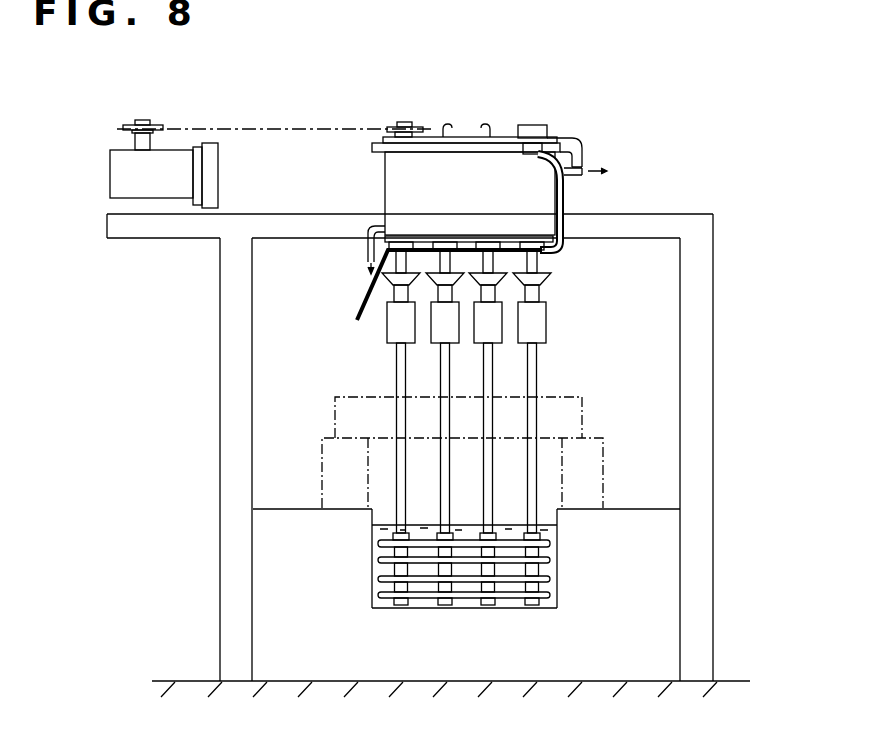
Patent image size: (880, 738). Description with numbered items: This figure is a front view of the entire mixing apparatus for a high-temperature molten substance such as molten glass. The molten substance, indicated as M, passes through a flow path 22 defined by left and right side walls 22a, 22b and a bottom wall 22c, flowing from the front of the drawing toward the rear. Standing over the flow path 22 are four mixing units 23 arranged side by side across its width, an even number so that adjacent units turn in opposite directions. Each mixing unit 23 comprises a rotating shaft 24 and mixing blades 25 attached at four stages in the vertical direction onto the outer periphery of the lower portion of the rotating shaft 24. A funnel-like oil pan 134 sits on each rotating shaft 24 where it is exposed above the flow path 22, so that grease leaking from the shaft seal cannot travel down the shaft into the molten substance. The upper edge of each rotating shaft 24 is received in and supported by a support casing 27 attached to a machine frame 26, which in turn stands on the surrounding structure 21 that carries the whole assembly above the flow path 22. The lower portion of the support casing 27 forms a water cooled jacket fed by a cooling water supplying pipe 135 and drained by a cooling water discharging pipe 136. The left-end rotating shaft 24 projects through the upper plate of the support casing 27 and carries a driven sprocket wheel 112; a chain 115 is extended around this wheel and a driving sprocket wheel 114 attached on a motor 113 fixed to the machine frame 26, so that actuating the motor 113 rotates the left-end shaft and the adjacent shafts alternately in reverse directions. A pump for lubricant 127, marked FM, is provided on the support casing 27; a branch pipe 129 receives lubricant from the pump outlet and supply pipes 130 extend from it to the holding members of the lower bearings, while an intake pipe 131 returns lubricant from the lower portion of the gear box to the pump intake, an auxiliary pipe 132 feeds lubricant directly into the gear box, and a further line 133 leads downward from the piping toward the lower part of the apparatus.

The frame 21 is at (634, 271).
The flow path 22 is at (568, 557).
The left side wall 22a is at (370, 590).
The right side wall 22b is at (560, 575).
The bottom wall 22c is at (493, 609).
The mixing unit 23 is at (396, 607).
The rotating shaft 24 is at (493, 390).
The mixing blades 25 is at (378, 543).
The machine frame 26 is at (300, 213).
The support casing 27 is at (372, 197).
The driven sprocket wheel 112 is at (410, 126).
The motor 113 is at (155, 199).
The driving sprocket wheel 114 is at (152, 122).
The chain 115 is at (282, 127).
The pump for lubricant 127 is at (547, 127).
The branch pipe 129 is at (532, 154).
The supply pipe 130 is at (565, 200).
The intake pipe 131 is at (584, 150).
The auxiliary pipe 132 is at (505, 137).
The discharge pipe 133 is at (354, 322).
The oil pan 134 is at (512, 265).
The cooling water supplying pipe 135 is at (364, 247).
The cooling water discharging pipe 136 is at (578, 176).
The molten metal M is at (465, 525).
The flow meter FM is at (540, 124).